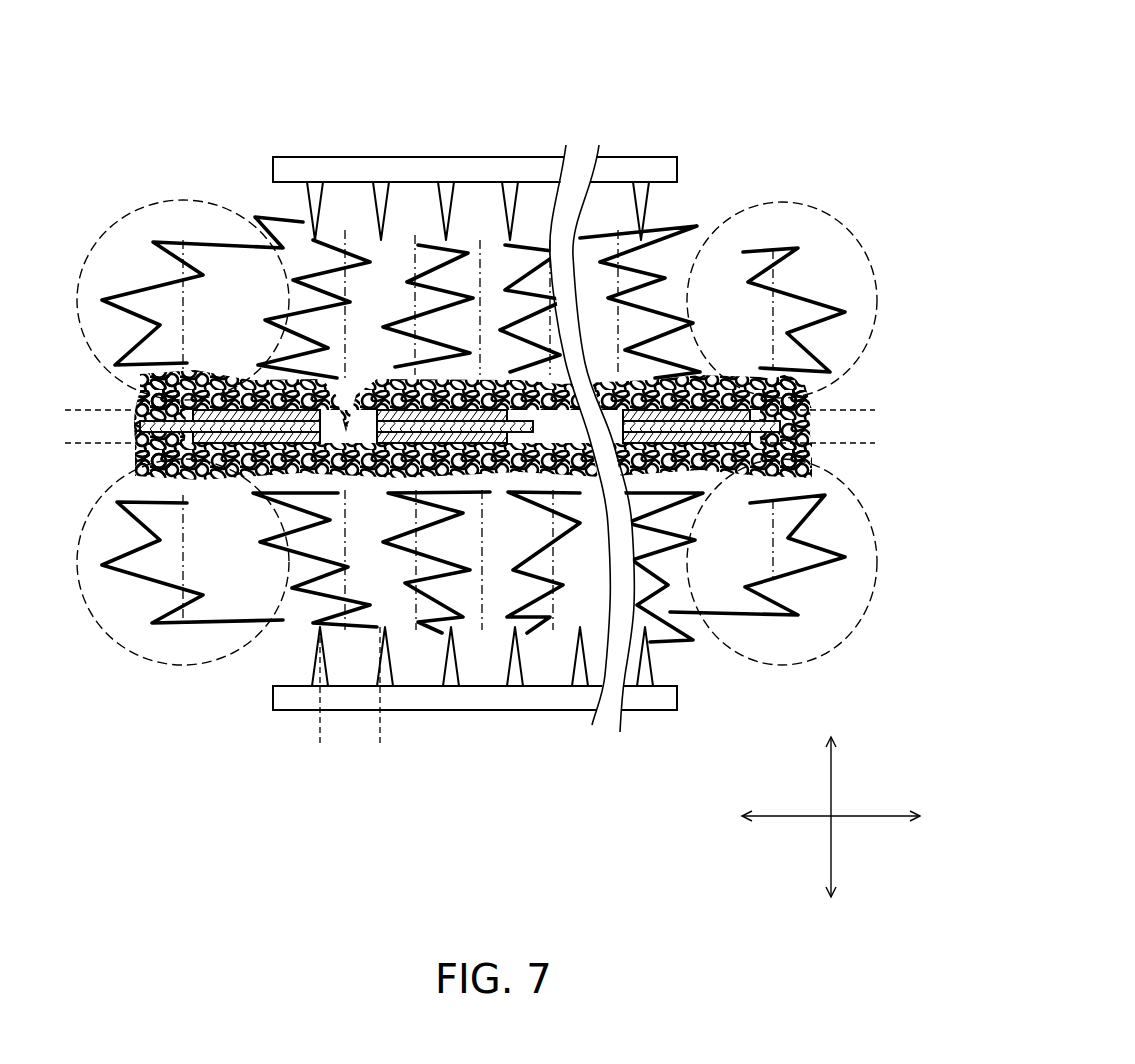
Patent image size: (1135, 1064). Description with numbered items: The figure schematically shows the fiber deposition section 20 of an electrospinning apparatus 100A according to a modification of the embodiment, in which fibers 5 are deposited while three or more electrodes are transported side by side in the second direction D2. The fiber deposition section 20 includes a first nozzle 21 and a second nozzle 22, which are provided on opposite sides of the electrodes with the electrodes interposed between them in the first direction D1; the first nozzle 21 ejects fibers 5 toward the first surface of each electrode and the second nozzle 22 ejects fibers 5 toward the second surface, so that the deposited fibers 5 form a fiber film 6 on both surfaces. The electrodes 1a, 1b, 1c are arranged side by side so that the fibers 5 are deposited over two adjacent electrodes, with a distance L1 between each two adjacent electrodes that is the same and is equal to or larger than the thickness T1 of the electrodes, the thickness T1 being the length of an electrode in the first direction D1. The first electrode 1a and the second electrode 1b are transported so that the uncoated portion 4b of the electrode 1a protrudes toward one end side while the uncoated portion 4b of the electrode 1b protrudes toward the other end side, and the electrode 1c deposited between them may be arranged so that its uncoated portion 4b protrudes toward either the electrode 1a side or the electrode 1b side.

The electrospinning apparatus 100A is at (708, 62).
The fiber deposition section 20 is at (703, 138).
The first nozzle 21 is at (606, 163).
The second nozzle 22 is at (532, 697).
The fiber 5 is at (760, 272).
The fiber film 6 is at (240, 378).
The uncoated portion 4b is at (533, 427).
The electrode 1a is at (210, 447).
The electrode 1b is at (733, 447).
The electrode 1c is at (517, 446).
The thickness T1 is at (89, 410).
The distance L1 is at (380, 727).
The first direction D1 is at (836, 803).
The second direction D2 is at (850, 819).